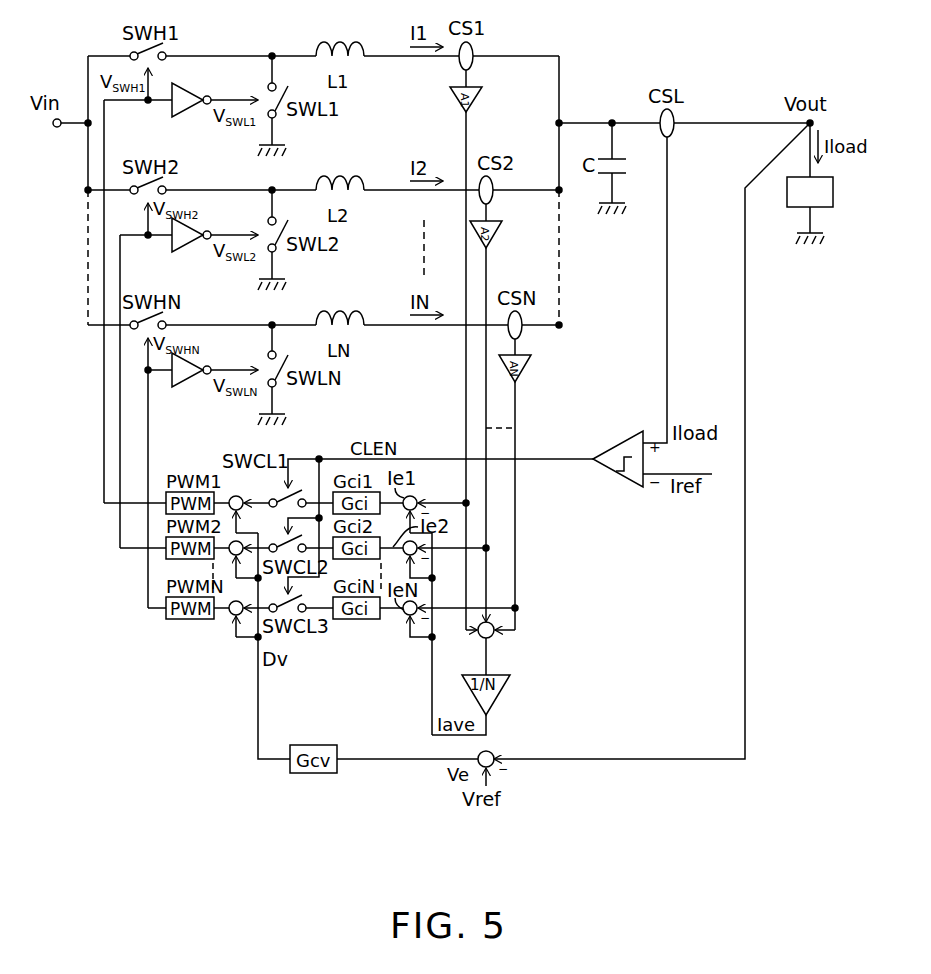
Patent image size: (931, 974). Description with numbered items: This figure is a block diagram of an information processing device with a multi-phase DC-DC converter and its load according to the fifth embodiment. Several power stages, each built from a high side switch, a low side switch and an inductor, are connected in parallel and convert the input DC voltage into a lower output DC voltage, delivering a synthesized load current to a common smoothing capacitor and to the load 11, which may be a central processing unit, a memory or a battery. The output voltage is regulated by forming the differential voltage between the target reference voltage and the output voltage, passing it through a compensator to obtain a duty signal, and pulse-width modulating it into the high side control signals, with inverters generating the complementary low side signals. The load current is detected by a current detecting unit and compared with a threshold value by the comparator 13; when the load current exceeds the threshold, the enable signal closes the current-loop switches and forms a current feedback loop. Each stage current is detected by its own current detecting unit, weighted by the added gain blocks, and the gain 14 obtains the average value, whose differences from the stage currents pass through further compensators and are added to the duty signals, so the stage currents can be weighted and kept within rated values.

The load 11 is at (799, 208).
The comparator 13 is at (616, 472).
The gain 14 is at (502, 690).